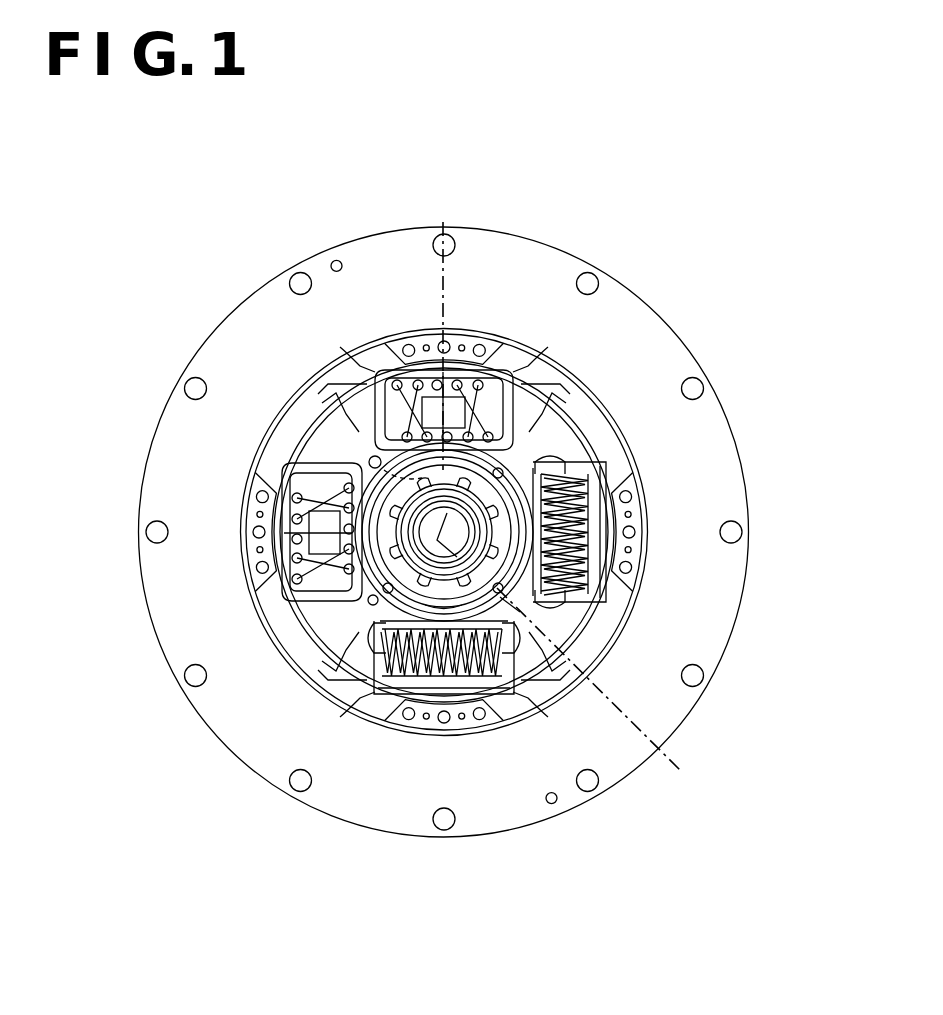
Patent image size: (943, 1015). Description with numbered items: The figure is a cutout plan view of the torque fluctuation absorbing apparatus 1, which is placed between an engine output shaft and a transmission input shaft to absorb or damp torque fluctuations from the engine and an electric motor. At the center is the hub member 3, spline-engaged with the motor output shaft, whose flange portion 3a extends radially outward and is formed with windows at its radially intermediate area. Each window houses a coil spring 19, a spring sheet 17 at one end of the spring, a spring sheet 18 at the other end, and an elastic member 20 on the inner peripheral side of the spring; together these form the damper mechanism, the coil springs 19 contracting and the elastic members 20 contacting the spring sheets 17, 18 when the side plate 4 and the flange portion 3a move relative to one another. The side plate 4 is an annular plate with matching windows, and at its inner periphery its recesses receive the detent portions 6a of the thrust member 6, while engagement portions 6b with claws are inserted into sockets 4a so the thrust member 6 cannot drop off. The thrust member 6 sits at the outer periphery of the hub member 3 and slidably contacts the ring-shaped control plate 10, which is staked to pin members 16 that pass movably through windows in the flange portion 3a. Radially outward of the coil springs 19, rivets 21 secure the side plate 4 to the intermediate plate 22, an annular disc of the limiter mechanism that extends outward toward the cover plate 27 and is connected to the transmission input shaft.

The torque fluctuation absorbing apparatus 1 is at (809, 283).
The hub member 3 is at (487, 510).
The flange portion 3a is at (305, 392).
The side plate 4 is at (587, 613).
The sockets 4a is at (495, 680).
The thrust member 6 is at (400, 573).
The detent portions 6a is at (440, 612).
The engagement portions 6b is at (510, 603).
The control plate 10 is at (367, 597).
The pin members 16 is at (368, 462).
The spring sheet 17 is at (365, 390).
The spring sheet 18 is at (500, 423).
The coil springs 19 is at (440, 387).
The elastic members 20 is at (447, 407).
The rivets 21 is at (250, 532).
The intermediate plate 22 is at (257, 588).
The cover plate 27 is at (735, 585).